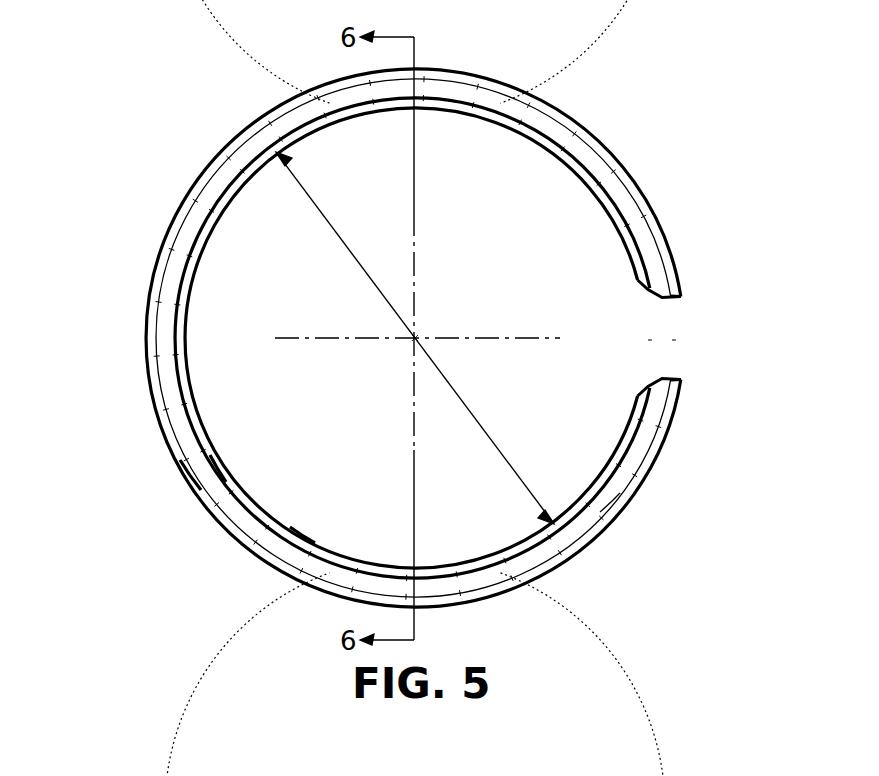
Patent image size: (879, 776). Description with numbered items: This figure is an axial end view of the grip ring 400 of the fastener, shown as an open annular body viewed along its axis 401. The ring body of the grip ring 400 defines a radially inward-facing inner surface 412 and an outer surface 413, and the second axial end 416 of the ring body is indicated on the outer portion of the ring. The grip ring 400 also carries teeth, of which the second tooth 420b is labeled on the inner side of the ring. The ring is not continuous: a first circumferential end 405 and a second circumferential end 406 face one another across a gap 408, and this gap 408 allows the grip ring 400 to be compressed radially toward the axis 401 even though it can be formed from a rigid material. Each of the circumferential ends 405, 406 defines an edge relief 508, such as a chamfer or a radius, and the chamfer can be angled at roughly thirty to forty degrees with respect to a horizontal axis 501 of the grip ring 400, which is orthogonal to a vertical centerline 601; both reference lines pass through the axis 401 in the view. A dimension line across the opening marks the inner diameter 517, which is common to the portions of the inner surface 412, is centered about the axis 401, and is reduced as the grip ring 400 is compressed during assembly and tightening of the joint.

The grip ring 400 is at (98, 127).
The axis 401 is at (415, 338).
The first circumferential end 405 is at (683, 300).
The second circumferential end 406 is at (674, 379).
The gap 408 is at (680, 342).
The inner surface 412 is at (225, 482).
The outer surface 413 is at (200, 490).
The second axial end 416 is at (620, 494).
The second tooth 420b is at (315, 542).
The horizontal axis 501 is at (293, 338).
The edge relief 508 is at (655, 298).
The inner diameter 517 is at (352, 248).
The vertical centerline 601 is at (415, 238).